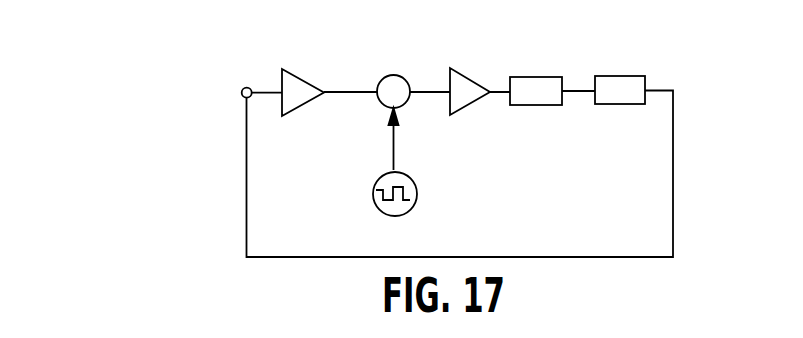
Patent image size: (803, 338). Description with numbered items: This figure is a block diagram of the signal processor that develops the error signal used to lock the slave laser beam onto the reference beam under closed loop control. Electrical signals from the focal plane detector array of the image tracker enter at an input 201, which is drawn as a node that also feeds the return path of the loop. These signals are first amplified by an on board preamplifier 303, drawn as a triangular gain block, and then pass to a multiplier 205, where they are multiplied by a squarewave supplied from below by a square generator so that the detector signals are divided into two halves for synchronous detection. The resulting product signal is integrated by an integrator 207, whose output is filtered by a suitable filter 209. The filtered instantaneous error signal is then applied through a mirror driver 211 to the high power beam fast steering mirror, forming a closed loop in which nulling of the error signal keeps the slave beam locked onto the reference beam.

The input 201 is at (242, 93).
The amplifier 303 is at (302, 74).
The multiplier 205 is at (377, 103).
The integrator 207 is at (472, 104).
The filter 209 is at (538, 105).
The mirror driver 211 is at (622, 104).